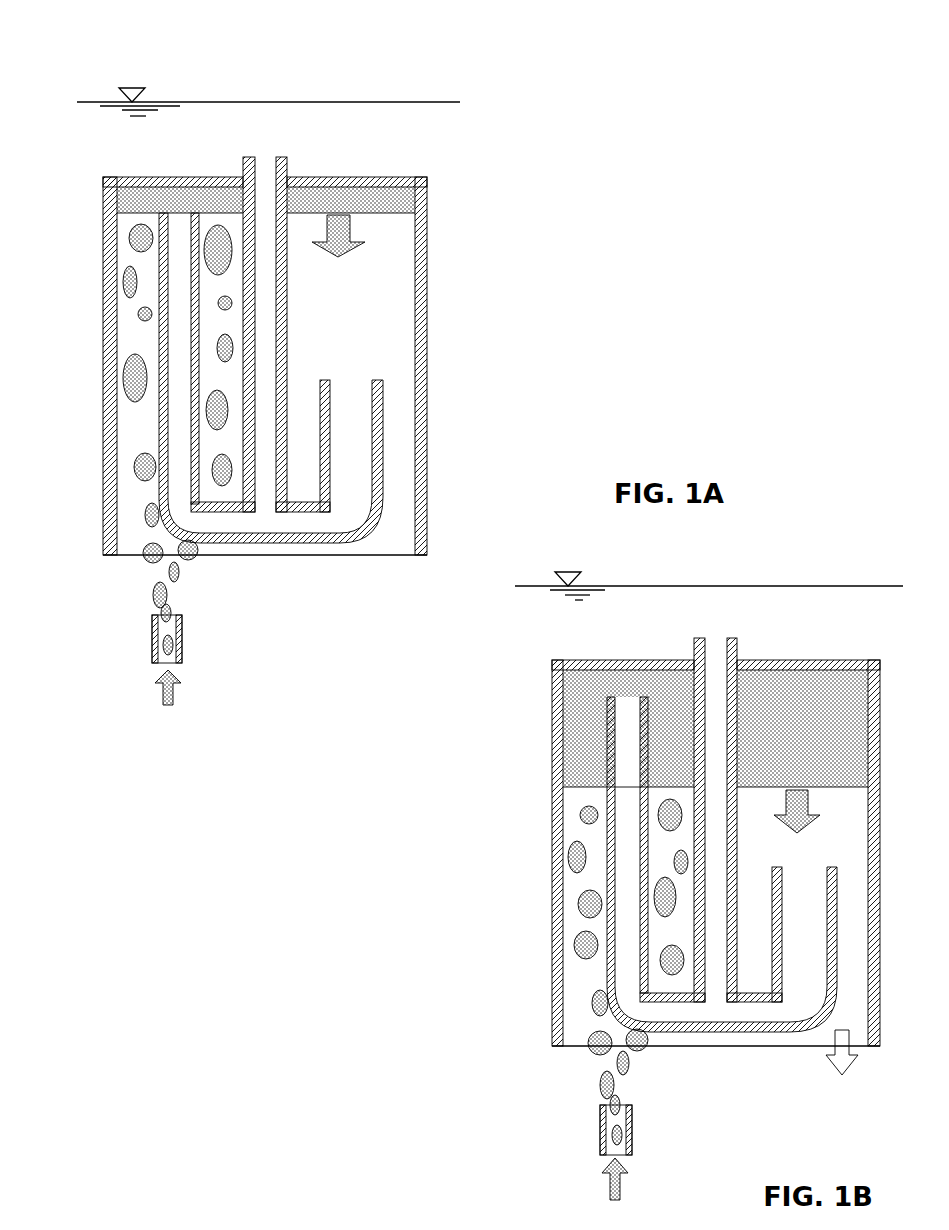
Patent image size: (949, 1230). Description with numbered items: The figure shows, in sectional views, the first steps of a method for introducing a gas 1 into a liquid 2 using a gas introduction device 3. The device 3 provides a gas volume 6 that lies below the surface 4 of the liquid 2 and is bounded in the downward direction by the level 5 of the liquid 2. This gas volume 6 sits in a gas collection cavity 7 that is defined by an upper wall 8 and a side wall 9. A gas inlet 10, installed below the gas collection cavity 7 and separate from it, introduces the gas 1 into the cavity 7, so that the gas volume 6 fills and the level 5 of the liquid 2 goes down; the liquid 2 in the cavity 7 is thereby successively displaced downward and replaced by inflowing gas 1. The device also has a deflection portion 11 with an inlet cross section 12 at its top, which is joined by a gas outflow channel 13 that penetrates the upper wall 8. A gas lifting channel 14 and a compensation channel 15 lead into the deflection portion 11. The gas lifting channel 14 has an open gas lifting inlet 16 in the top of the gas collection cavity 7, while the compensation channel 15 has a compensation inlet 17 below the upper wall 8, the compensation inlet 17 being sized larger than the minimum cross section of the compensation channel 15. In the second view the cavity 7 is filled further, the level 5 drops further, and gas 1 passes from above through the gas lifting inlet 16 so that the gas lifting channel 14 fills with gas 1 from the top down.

In FIG. 1A, the gas 1 is at (150, 557).
In FIG. 1B, the gas 1 is at (597, 1045).
In FIG. 1A, the liquid 2 is at (298, 130).
In FIG. 1B, the liquid 2 is at (858, 985).
In FIG. 1A, the gas introduction device 3 is at (560, 259).
In FIG. 1A, the surface of the liquid 4 is at (223, 102).
In FIG. 1A, the level of the liquid 5 is at (377, 215).
In FIG. 1B, the level of the liquid 5 is at (808, 787).
In FIG. 1A, the gas volume 6 is at (353, 200).
In FIG. 1B, the gas volume 6 is at (785, 690).
In FIG. 1A, the gas collection cavity 7 is at (130, 343).
In FIG. 1B, the gas collection cavity 7 is at (845, 838).
In FIG. 1A, the upper wall 8 is at (188, 187).
In FIG. 1A, the side wall 9 is at (427, 492).
In FIG. 1A, the gas inlet 10 is at (182, 635).
In FIG. 1A, the deflection portion 11 is at (245, 525).
In FIG. 1A, the inlet cross section 12 is at (260, 512).
In FIG. 1A, the gas outflow channel 13 is at (270, 283).
In FIG. 1A, the gas lifting channel 14 is at (178, 428).
In FIG. 1B, the gas lifting channel 14 is at (626, 727).
In FIG. 1A, the compensation channel 15 is at (353, 445).
In FIG. 1A, the gas lifting inlet 16 is at (175, 212).
In FIG. 1B, the gas lifting inlet 16 is at (627, 697).
In FIG. 1A, the compensation inlet 17 is at (353, 380).